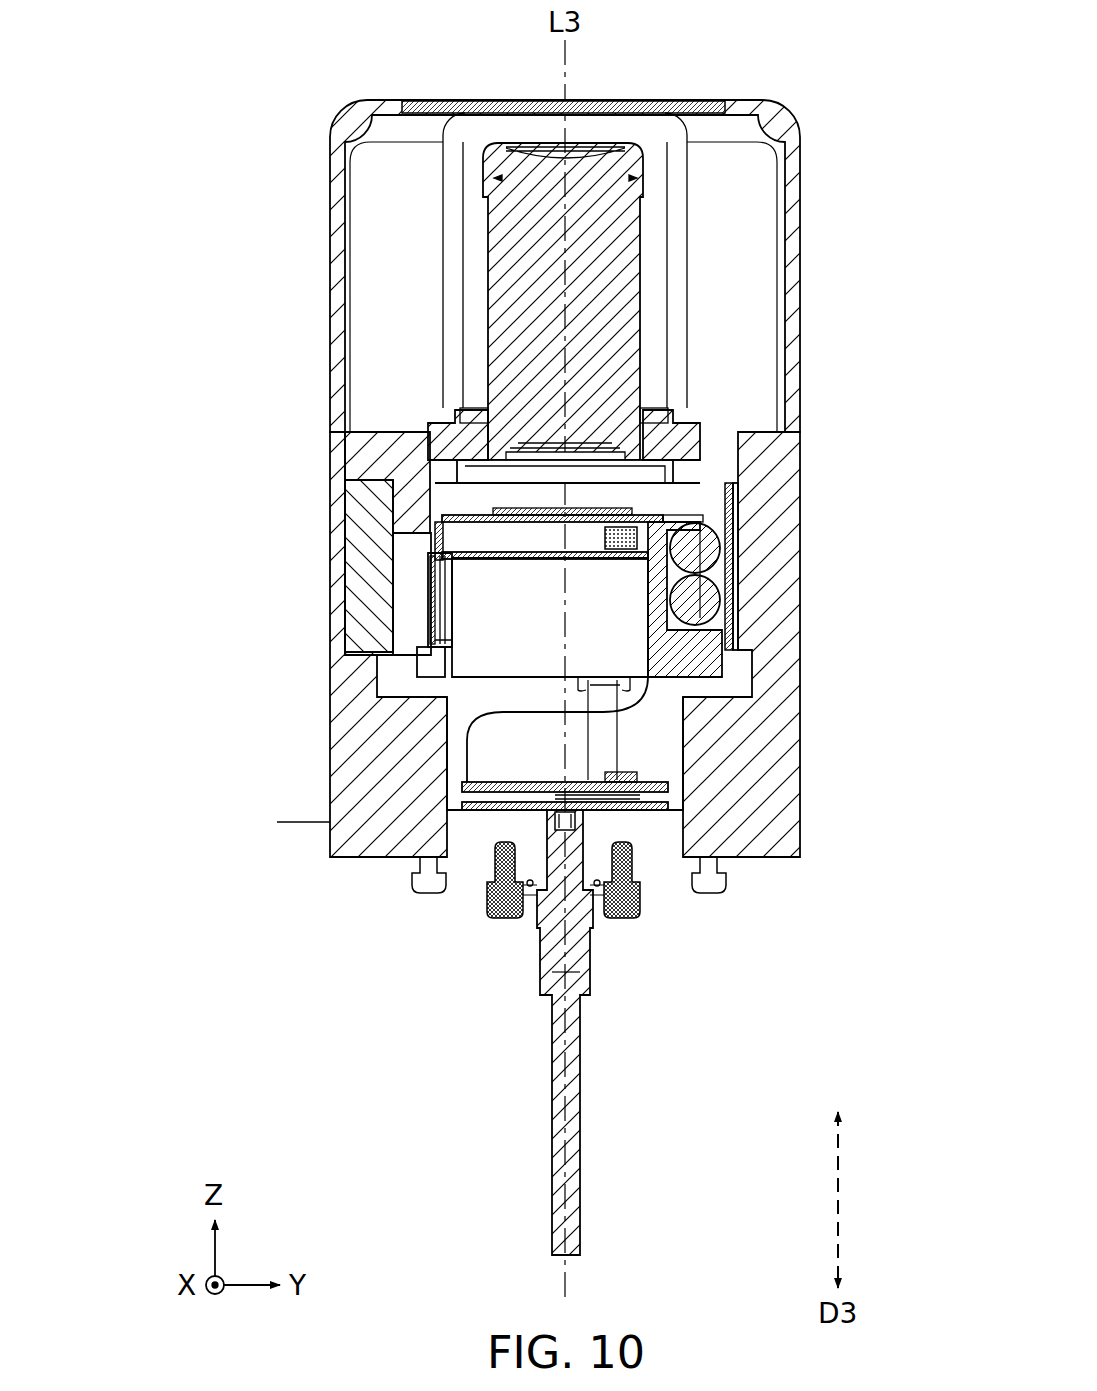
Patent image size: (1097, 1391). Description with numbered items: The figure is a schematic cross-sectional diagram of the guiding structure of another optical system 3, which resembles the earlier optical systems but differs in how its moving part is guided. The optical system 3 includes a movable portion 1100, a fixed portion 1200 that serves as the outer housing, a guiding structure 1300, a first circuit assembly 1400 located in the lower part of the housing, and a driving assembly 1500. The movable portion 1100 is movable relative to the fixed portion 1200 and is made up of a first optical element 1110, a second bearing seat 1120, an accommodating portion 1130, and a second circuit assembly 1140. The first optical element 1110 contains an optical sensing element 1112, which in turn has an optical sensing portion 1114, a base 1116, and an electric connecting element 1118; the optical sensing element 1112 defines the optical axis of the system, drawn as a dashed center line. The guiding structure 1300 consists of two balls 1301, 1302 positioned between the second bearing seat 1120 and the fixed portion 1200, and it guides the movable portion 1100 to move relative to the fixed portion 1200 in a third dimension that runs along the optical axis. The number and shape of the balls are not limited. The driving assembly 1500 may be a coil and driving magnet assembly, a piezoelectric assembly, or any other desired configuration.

The optical system 3 is at (818, 72).
The movable portion 1100 is at (185, 6).
The first optical element 1110 is at (445, 500).
The optical sensing element 1112 is at (650, 505).
The optical sensing portion 1114 is at (593, 512).
The base 1116 is at (728, 512).
The electric connecting element 1118 is at (703, 524).
The second bearing seat 1120 is at (748, 662).
The accommodating portion 1130 is at (500, 640).
The second circuit assembly 1140 is at (432, 578).
The fixed portion 1200 is at (793, 215).
The guiding structure 1300 is at (722, 573).
The ball 1301 is at (712, 553).
The ball 1302 is at (708, 606).
The first circuit assembly 1400 is at (468, 727).
The driving assembly 1500 is at (630, 742).